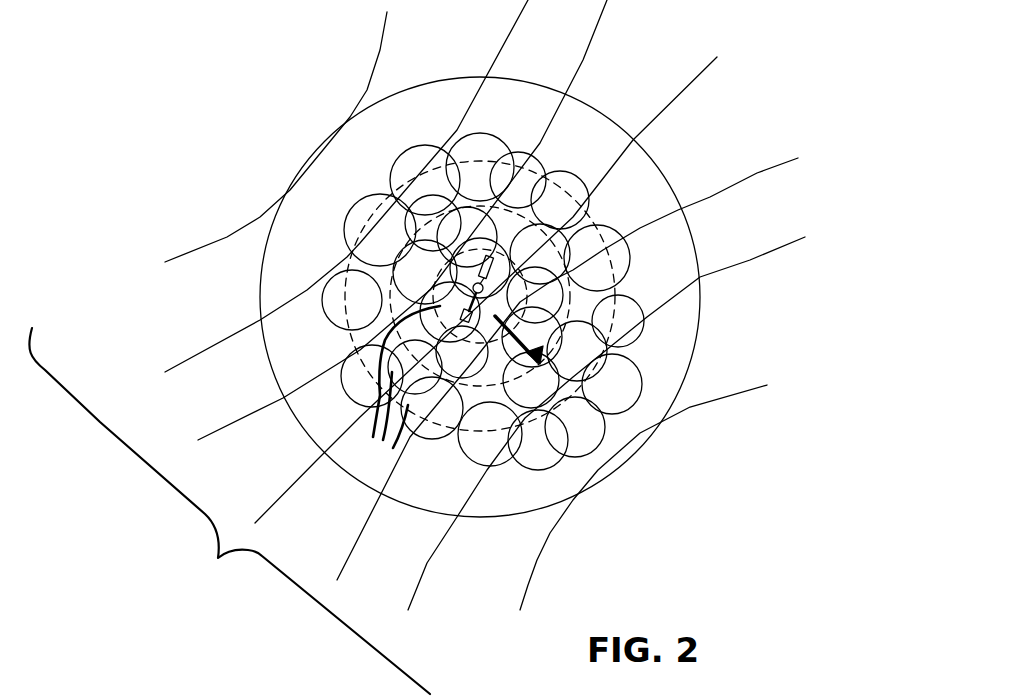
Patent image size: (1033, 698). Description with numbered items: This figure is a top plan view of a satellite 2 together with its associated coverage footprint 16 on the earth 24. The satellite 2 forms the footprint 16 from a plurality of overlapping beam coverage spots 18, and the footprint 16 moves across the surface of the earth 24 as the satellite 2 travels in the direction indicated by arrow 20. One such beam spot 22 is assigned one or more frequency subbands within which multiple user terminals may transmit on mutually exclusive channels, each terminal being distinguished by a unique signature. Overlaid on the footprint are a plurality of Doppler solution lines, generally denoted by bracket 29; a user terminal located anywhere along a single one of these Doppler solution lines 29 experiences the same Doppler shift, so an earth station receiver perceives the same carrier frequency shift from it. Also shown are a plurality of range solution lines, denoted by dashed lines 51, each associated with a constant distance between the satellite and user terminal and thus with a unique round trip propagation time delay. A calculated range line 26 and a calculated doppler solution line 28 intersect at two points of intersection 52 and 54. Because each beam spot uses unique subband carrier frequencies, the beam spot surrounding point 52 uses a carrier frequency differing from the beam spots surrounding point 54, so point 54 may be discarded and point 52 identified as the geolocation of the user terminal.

The satellite 2 is at (442, 290).
The footprint 16 is at (357, 131).
The beam coverage spots 18 is at (355, 388).
The arrow 20 is at (490, 425).
The beam spot 22 is at (626, 298).
The earth 24 is at (258, 282).
The range line 26 is at (527, 430).
The doppler solution line 28 is at (722, 275).
The Doppler solution lines 29 is at (229, 511).
The range solution lines 51 is at (406, 425).
The point of intersection 52 is at (607, 332).
The point of intersection 54 is at (487, 470).